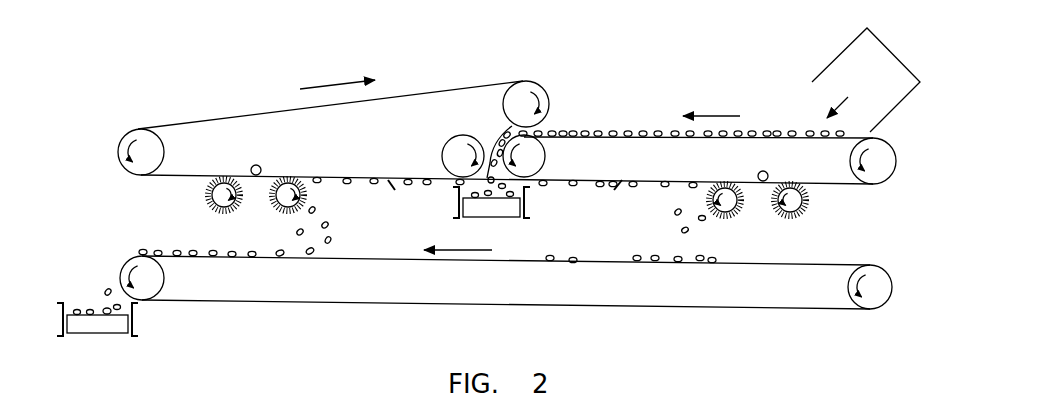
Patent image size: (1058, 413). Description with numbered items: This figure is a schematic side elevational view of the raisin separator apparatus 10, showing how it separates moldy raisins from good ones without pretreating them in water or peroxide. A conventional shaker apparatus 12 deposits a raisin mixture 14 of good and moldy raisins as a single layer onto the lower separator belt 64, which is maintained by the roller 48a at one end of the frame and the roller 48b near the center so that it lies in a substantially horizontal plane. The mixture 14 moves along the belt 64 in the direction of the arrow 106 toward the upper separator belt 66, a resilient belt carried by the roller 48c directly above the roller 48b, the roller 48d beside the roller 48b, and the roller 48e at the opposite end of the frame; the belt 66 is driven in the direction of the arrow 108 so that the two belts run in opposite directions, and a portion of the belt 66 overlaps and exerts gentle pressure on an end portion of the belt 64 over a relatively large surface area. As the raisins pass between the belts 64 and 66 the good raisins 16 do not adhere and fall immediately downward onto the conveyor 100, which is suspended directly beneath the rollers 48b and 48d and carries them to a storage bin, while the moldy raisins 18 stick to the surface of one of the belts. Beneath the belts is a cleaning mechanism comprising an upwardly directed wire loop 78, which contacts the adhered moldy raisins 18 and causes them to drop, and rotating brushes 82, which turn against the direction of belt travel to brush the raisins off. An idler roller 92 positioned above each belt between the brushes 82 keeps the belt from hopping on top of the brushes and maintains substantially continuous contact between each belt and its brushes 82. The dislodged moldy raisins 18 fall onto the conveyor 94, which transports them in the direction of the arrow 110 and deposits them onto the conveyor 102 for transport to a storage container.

The separator apparatus 10 is at (632, 28).
The shaker apparatus 12 is at (853, 36).
The raisin mixture 14 is at (754, 130).
The good raisins 16 is at (505, 186).
The moldy raisins 18 is at (372, 184).
The roller 48a is at (886, 152).
The roller 48b is at (548, 154).
The roller 48c is at (524, 92).
The roller 48d is at (449, 148).
The roller 48e is at (138, 131).
The lower separator belt 64 is at (650, 131).
The upper separator belt 66 is at (267, 112).
The wire loop 78 is at (396, 192).
The brushes 82 is at (282, 210).
The idler roller 92 is at (261, 166).
The conveyor 94 is at (643, 309).
The conveyor 100 is at (497, 204).
The conveyor 102 is at (104, 324).
The arrow 106 is at (713, 116).
The arrow 108 is at (332, 83).
The arrow 110 is at (452, 248).